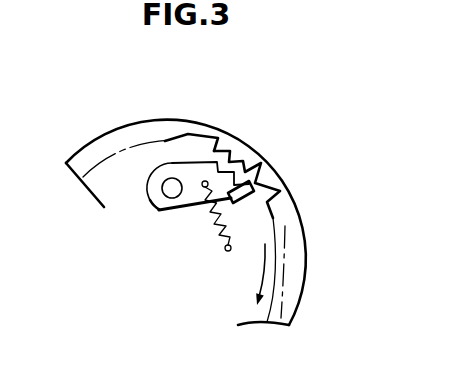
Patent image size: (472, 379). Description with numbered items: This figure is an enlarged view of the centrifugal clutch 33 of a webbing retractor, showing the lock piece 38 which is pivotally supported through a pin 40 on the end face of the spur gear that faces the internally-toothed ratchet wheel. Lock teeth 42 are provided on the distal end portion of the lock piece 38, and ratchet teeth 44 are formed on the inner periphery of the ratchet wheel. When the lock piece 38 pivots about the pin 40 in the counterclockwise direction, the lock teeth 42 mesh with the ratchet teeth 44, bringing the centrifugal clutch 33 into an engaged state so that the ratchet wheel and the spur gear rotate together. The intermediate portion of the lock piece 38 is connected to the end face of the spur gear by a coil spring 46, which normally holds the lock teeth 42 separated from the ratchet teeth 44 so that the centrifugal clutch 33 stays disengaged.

The centrifugal clutch 33 is at (138, 111).
The lock piece 38 is at (185, 204).
The pin 40 is at (168, 195).
The lock teeth 42 is at (226, 156).
The ratchet teeth 44 is at (201, 141).
The coil spring 46 is at (222, 225).